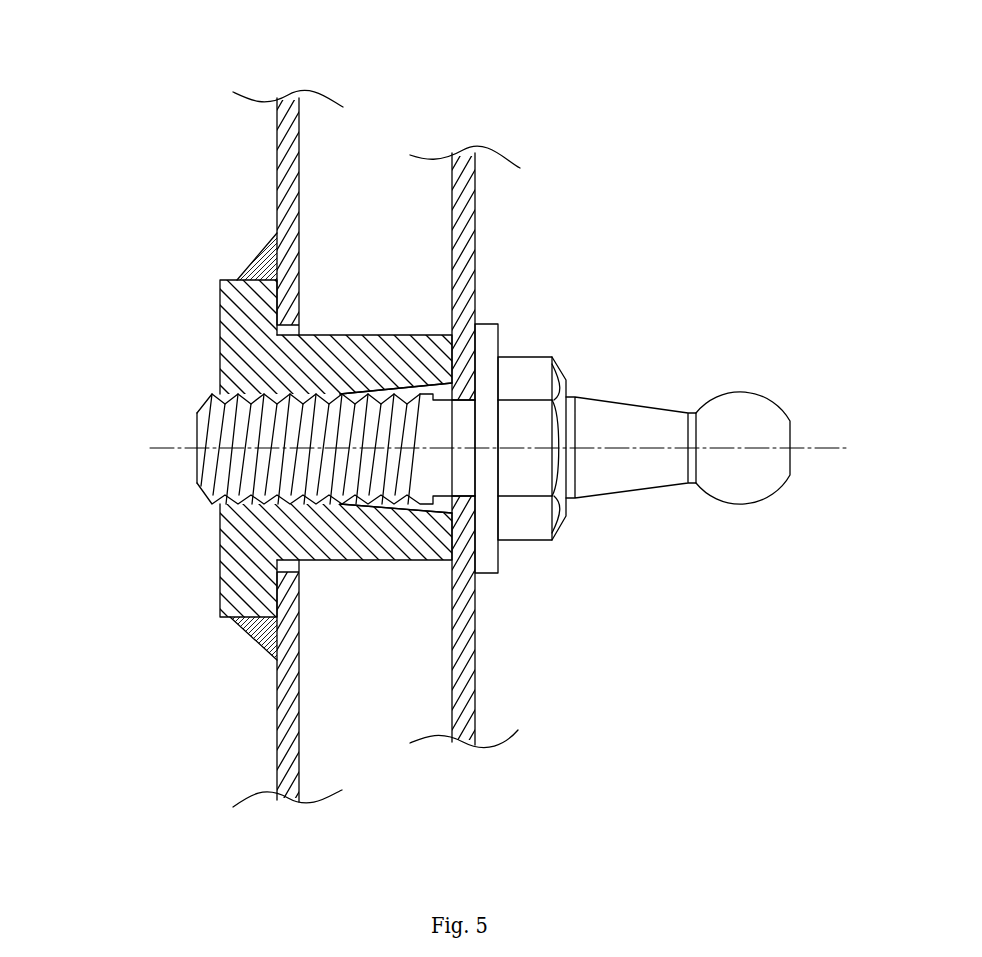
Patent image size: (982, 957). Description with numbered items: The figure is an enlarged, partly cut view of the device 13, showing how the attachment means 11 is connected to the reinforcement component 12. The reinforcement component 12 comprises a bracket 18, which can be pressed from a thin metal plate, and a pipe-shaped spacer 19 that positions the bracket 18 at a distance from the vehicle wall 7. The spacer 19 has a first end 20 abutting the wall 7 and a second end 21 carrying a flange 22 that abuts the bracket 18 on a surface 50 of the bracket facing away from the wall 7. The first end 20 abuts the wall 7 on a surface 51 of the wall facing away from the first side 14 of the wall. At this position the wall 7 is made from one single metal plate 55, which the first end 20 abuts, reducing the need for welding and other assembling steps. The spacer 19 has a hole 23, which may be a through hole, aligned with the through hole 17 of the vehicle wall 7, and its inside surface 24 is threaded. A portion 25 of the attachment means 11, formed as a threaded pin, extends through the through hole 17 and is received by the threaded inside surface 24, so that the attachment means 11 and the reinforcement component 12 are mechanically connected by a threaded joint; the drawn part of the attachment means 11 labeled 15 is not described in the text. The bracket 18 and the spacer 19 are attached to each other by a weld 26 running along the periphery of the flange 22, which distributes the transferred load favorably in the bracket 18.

The vehicle wall 7 is at (470, 450).
The attachment means 11 is at (533, 397).
The reinforcement component 12 is at (233, 691).
The device 13 is at (198, 207).
The first side of the wall 14 is at (533, 450).
The ball head 15 is at (742, 425).
The through hole 17 is at (480, 392).
The bracket 18 is at (277, 178).
The spacer 19 is at (395, 447).
The first end 20 is at (458, 348).
The second end 21 is at (395, 426).
The flange 22 is at (255, 300).
The hole 23 is at (395, 520).
The inside surface 24 is at (312, 478).
The attachment means portion 25 is at (353, 440).
The weld 26 is at (253, 253).
The surface of the bracket 50 is at (273, 709).
The surface of the wall 51 is at (450, 667).
The metal plate 55 is at (452, 205).